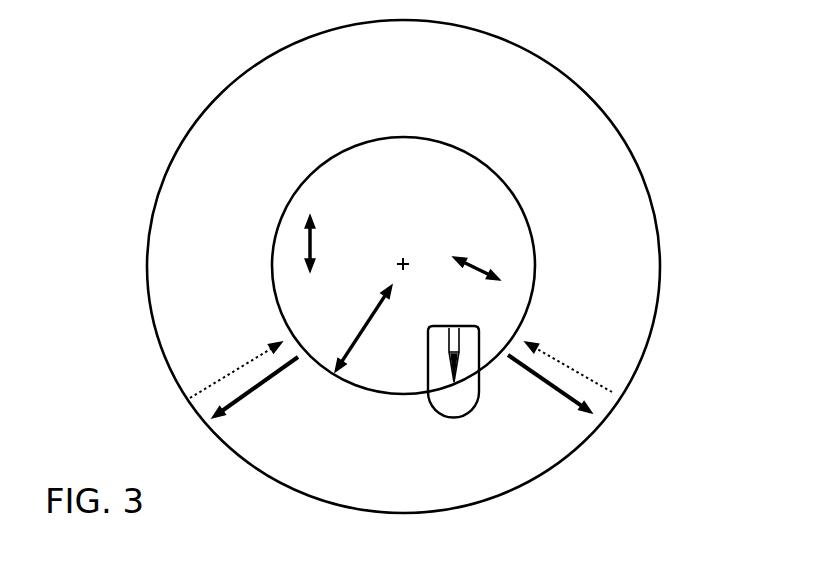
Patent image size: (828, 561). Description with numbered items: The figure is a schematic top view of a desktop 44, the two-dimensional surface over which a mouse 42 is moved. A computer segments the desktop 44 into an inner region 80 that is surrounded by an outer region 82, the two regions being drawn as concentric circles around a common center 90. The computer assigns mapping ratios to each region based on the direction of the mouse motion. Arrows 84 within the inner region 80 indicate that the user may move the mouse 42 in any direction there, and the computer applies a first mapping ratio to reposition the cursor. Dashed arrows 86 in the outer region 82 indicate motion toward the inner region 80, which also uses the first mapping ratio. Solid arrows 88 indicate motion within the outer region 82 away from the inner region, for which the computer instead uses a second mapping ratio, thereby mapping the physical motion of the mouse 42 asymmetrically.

The desktop 44 is at (652, 113).
The outer 2D region 82 is at (663, 262).
The inner 2D region 80 is at (533, 217).
The center 90 is at (405, 258).
The arrows 84 is at (313, 232).
The arrows 86 is at (232, 372).
The arrows 88 is at (259, 387).
The mouse 42 is at (455, 417).